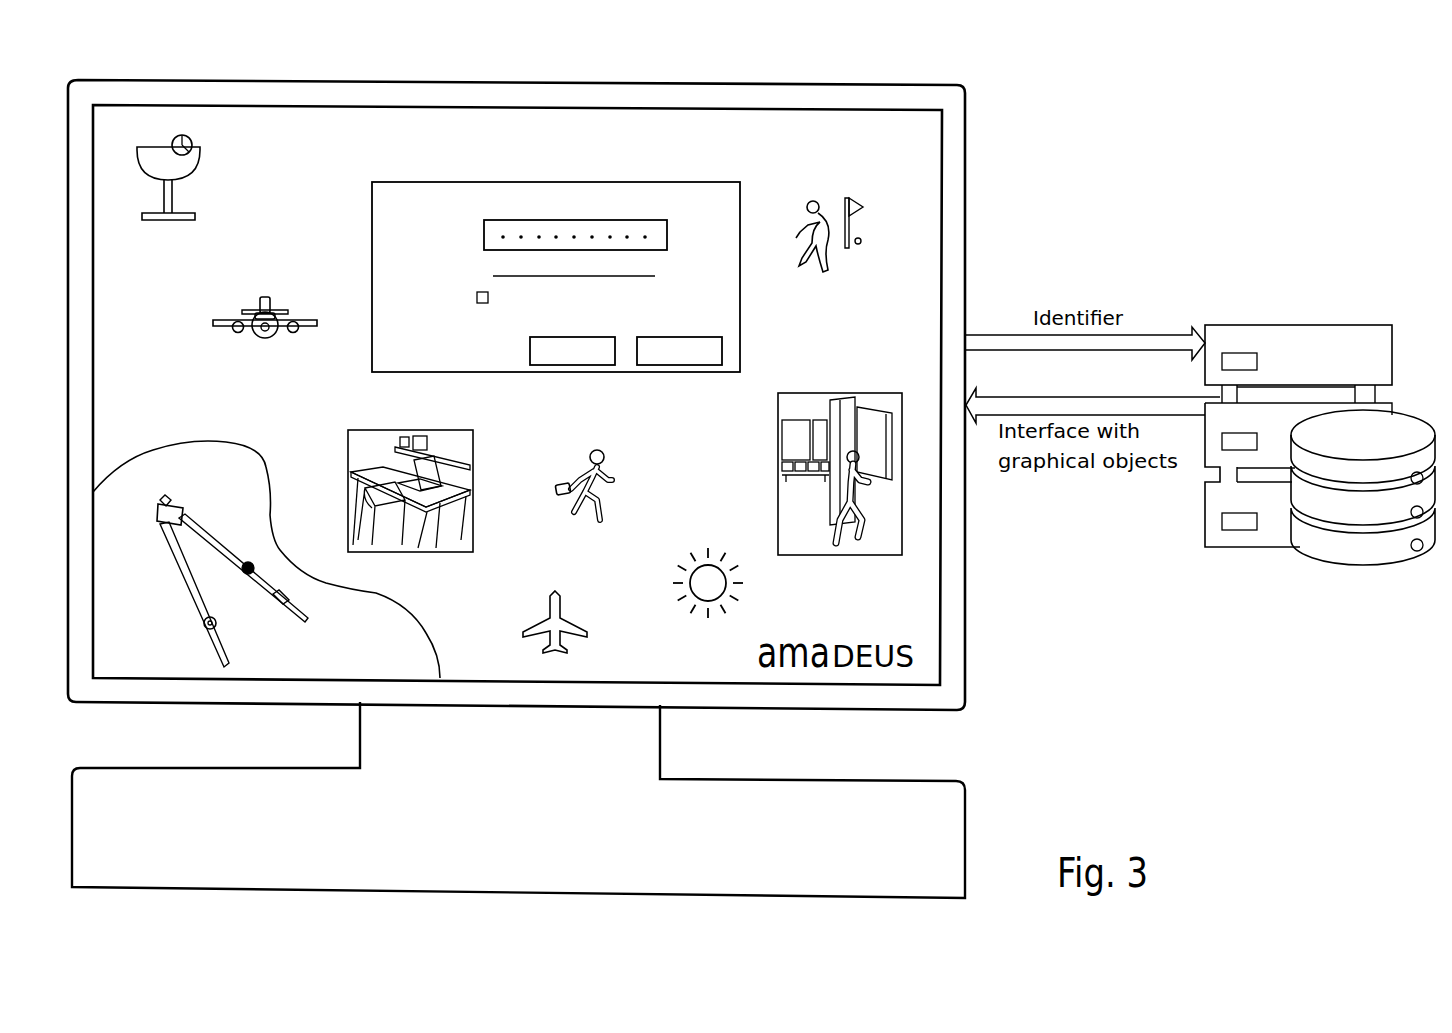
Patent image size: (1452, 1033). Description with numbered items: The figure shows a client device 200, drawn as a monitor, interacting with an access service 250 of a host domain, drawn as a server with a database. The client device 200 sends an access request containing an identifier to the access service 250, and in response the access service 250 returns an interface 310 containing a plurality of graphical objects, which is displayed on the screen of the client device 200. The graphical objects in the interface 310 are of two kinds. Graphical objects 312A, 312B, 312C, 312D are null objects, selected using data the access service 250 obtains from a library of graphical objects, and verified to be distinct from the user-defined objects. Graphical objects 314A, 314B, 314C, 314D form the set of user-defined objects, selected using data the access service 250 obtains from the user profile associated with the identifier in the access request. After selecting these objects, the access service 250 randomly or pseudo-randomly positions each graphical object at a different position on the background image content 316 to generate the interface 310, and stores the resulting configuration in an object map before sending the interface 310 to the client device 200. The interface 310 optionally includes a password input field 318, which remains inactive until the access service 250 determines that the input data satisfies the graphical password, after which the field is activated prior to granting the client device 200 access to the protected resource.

The client device 200 is at (965, 640).
The interface 310 is at (940, 62).
The graphical object (null object) 312A is at (203, 150).
The graphical object (null object) 312B is at (270, 295).
The graphical object (null object) 312C is at (348, 436).
The graphical object (null object) 312D is at (820, 190).
The graphical object (user-defined object) 314A is at (548, 606).
The graphical object (user-defined object) 314B is at (608, 462).
The graphical object (user-defined object) 314C is at (735, 593).
The graphical object (user-defined object) 314D is at (875, 393).
The background image content 316 is at (745, 150).
The password input field 318 is at (483, 244).
The access service 250 is at (1266, 325).